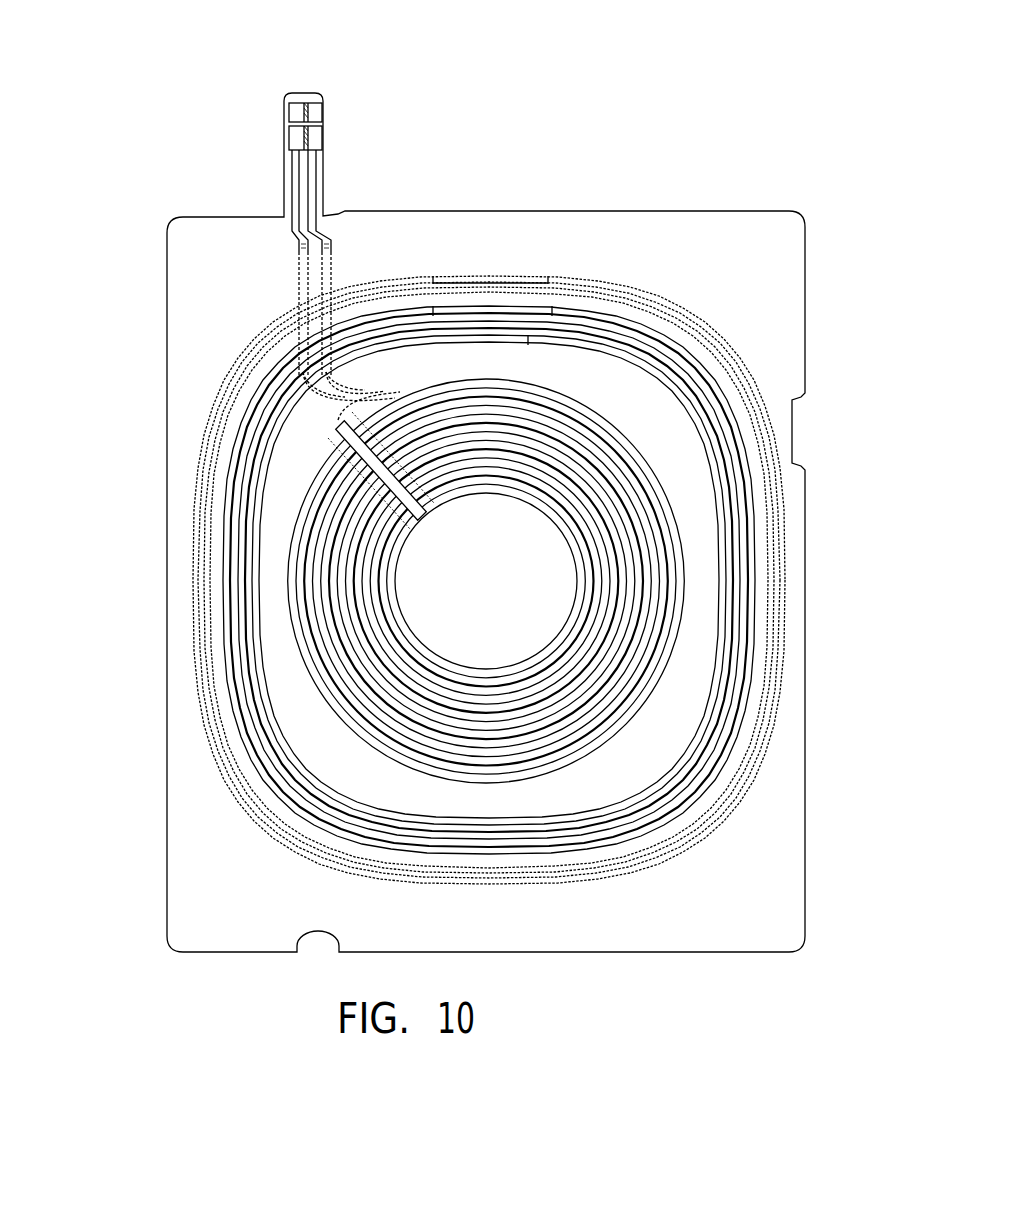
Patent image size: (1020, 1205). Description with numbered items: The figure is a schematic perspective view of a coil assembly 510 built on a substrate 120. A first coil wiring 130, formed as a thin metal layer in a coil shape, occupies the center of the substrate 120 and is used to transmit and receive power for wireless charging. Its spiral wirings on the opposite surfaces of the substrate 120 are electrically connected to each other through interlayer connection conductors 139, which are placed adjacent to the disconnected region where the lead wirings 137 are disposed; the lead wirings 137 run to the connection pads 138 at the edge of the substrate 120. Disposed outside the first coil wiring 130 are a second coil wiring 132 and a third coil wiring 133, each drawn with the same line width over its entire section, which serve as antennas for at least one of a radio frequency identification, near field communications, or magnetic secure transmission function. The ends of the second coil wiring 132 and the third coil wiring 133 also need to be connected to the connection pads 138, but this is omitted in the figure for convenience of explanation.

The coil assembly 510 is at (503, 28).
The substrate 120 is at (610, 216).
The first coil wiring 130 is at (307, 683).
The second coil wiring 132 is at (290, 770).
The third coil wiring 133 is at (290, 827).
The lead wirings 137 is at (313, 175).
The connection pads 138 is at (297, 140).
The interlayer connection conductors 139 is at (390, 408).